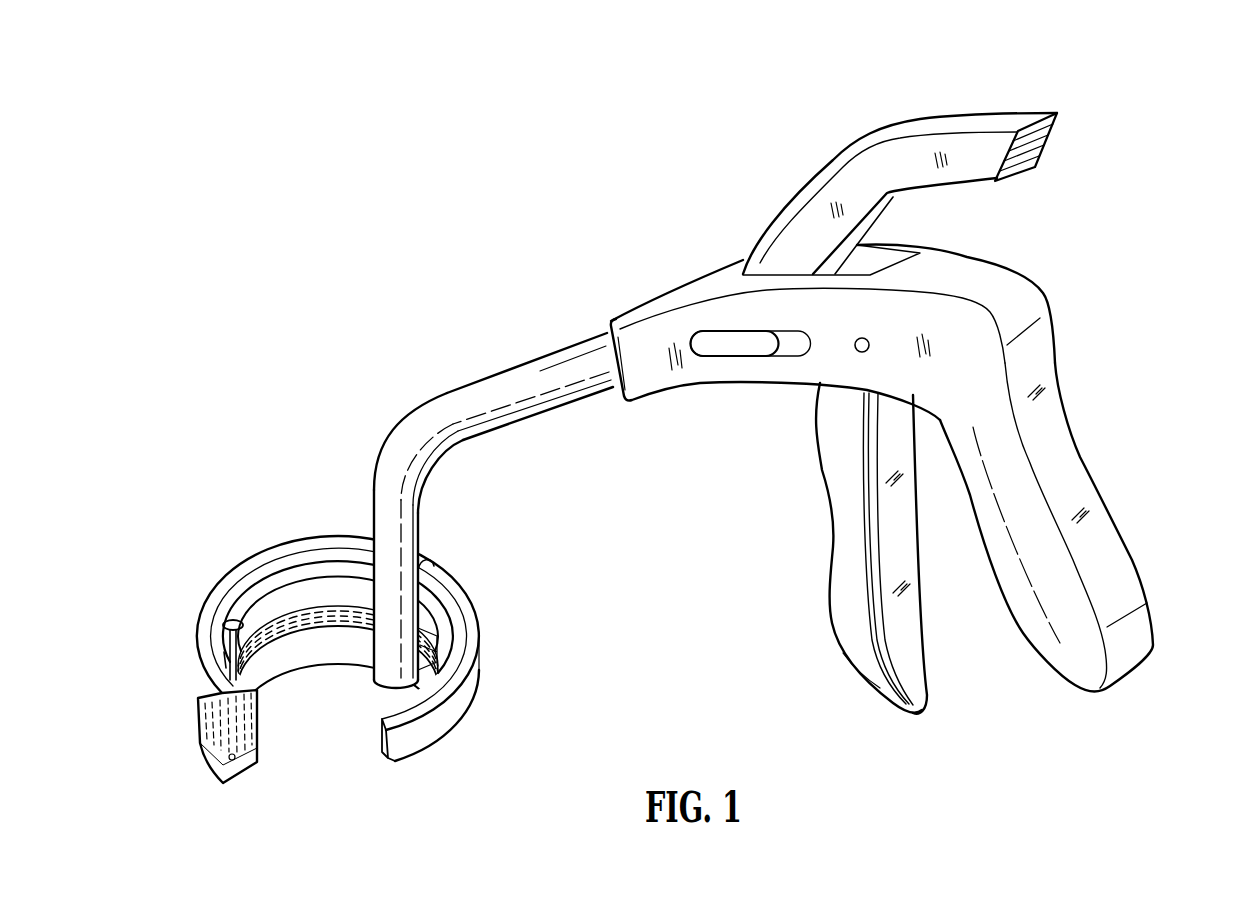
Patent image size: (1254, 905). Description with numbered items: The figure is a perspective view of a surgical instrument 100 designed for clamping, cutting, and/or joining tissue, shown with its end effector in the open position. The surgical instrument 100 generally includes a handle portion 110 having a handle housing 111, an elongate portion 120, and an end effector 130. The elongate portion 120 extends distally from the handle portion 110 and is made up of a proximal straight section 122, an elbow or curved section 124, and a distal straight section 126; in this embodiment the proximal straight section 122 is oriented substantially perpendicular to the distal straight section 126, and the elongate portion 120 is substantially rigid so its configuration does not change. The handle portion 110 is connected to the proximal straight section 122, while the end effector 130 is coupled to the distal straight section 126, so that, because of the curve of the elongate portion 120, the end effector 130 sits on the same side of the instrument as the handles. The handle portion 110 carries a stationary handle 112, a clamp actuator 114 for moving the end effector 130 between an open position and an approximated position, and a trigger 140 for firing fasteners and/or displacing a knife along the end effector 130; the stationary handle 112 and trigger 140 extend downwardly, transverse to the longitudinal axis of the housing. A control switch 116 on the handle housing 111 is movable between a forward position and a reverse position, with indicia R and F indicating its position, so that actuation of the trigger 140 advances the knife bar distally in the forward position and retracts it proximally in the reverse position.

The surgical instrument 100 is at (665, 148).
The handle portion 110 is at (1107, 98).
The handle housing 111 is at (937, 328).
The stationary handle 112 is at (1117, 588).
The clamp actuator 114 is at (908, 155).
The control switch 116 is at (753, 347).
The elongate portion 120 is at (476, 370).
The proximal straight section 122 is at (538, 370).
The curved section 124 is at (403, 447).
The distal straight section 126 is at (405, 556).
The end effector 130 is at (247, 515).
The trigger 140 is at (858, 652).